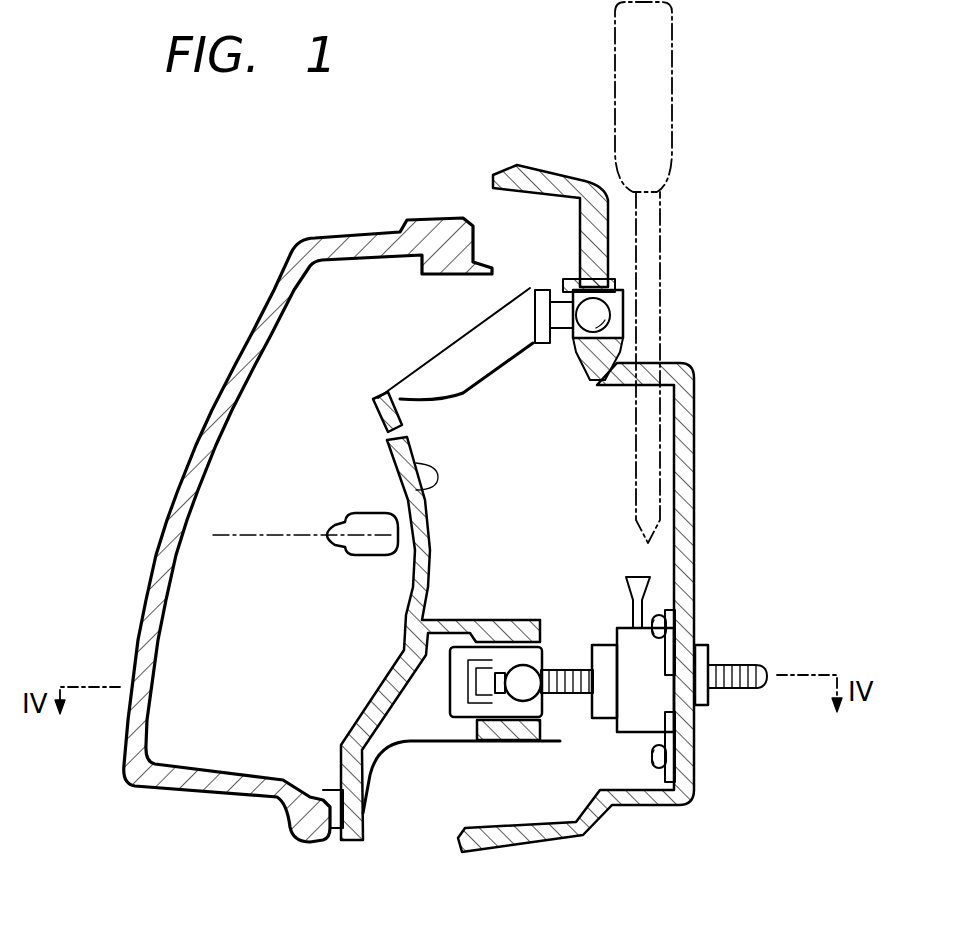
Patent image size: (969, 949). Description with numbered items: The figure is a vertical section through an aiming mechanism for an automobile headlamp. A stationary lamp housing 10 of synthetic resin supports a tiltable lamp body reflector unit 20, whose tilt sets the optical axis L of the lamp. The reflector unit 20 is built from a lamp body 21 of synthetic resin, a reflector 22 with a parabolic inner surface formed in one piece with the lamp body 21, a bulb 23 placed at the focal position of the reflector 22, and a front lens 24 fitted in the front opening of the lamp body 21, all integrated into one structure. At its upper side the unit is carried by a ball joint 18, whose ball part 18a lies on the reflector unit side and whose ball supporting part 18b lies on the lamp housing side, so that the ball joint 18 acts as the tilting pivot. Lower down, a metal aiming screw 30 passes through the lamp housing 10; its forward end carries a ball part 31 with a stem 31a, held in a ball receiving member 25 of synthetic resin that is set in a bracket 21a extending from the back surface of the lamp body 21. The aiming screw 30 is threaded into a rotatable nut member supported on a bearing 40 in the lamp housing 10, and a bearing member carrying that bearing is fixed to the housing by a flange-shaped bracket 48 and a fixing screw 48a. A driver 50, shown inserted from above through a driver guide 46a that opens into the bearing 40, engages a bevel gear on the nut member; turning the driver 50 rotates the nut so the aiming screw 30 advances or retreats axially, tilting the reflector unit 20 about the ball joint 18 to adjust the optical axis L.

The lamp housing 10 is at (690, 458).
The ball joint 18 is at (638, 311).
The ball part 18a is at (607, 287).
The ball supporting part 18b is at (623, 341).
The lamp body reflector unit 20 is at (170, 429).
The lamp body 21 is at (415, 467).
The bracket 21a is at (467, 619).
The reflector 22 is at (410, 593).
The bulb 23 is at (343, 552).
The front lens 24 is at (203, 407).
The ball receiving member 25 is at (520, 741).
The aiming screw 30 is at (578, 717).
The ball part 31 is at (514, 688).
The ball stem 31a is at (512, 682).
The bearing 40 is at (648, 671).
The driver guide 46a is at (627, 600).
The flange-shaped bracket 48 is at (675, 615).
The fixing screw 48a is at (668, 610).
The driver 50 is at (670, 278).
The optical axis L is at (160, 545).